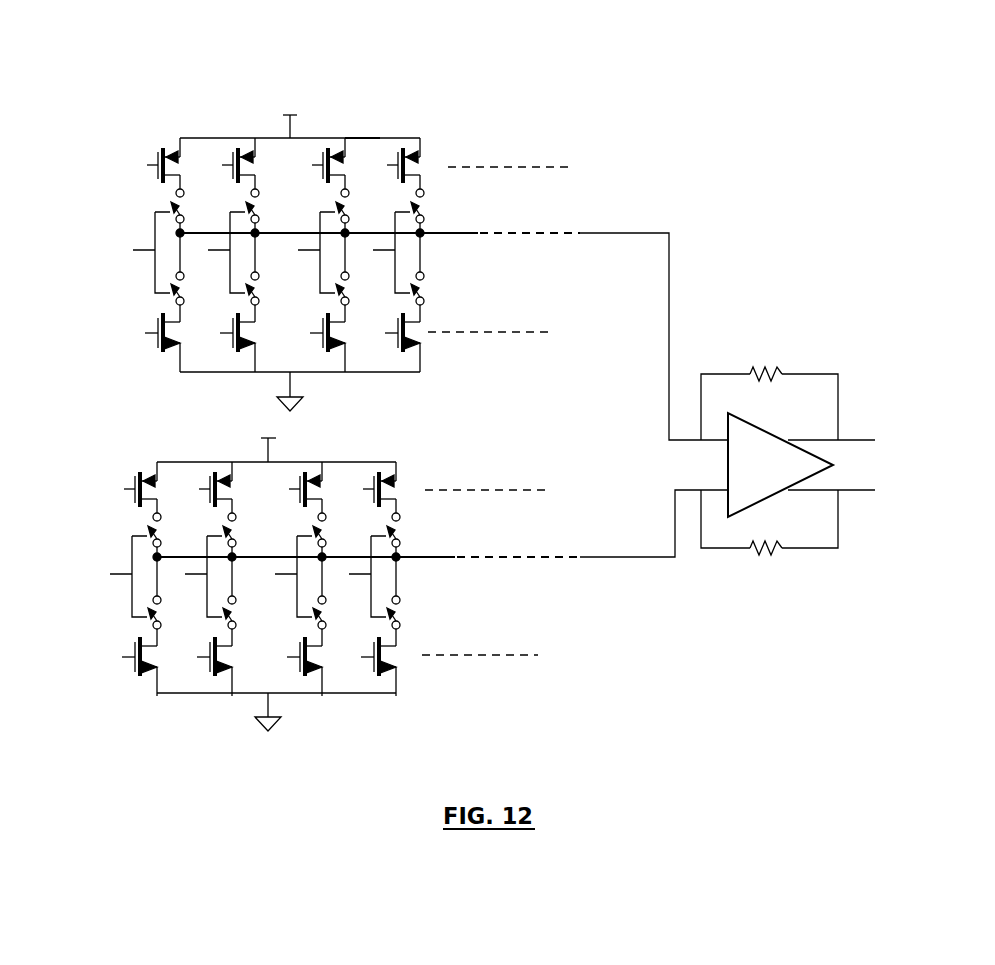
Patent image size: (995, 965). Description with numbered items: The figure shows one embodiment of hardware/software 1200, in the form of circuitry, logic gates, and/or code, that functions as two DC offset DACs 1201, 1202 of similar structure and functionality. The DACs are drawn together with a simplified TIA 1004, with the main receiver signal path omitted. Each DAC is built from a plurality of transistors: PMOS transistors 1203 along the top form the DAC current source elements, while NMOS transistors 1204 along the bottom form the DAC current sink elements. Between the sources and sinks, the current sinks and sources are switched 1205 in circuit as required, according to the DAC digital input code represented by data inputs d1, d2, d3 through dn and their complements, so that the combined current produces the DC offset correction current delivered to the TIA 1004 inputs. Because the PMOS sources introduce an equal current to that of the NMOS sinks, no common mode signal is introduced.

The hardware/software 1200 is at (668, 164).
The DAC 1201 is at (118, 301).
The DAC 1202 is at (118, 626).
The PMOS transistors 1203 is at (185, 137).
The NMOS transistors 1204 is at (405, 352).
The switches 1205 is at (437, 282).
The TIA 1004 is at (788, 441).